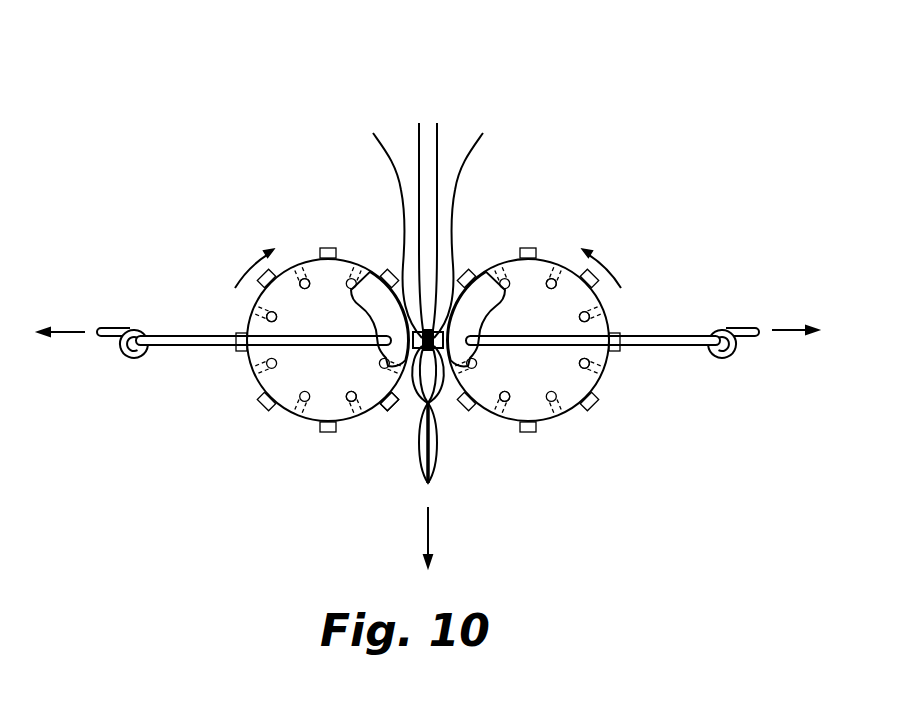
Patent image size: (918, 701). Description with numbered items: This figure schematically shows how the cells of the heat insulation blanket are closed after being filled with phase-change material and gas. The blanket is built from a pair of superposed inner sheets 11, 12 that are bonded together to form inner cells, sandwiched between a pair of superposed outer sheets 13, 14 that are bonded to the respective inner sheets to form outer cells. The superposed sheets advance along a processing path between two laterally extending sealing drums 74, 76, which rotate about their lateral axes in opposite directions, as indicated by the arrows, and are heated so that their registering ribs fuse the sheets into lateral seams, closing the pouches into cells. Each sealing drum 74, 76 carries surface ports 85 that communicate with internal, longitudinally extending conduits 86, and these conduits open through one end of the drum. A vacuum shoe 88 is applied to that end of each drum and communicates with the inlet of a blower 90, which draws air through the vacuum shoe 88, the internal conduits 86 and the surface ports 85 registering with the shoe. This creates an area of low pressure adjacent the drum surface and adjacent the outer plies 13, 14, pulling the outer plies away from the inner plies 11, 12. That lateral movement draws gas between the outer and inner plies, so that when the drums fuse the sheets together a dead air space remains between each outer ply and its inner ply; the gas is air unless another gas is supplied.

The inner sheet 11 is at (438, 137).
The inner sheet 12 is at (416, 136).
The outer sheet 13 is at (478, 153).
The outer sheet 14 is at (373, 143).
The sealing drum 74 is at (562, 415).
The sealing drum 76 is at (297, 413).
The surface port 85 is at (296, 262).
The internal conduit 86 is at (255, 318).
The vacuum shoe 88 is at (368, 296).
The blower 90 is at (130, 330).